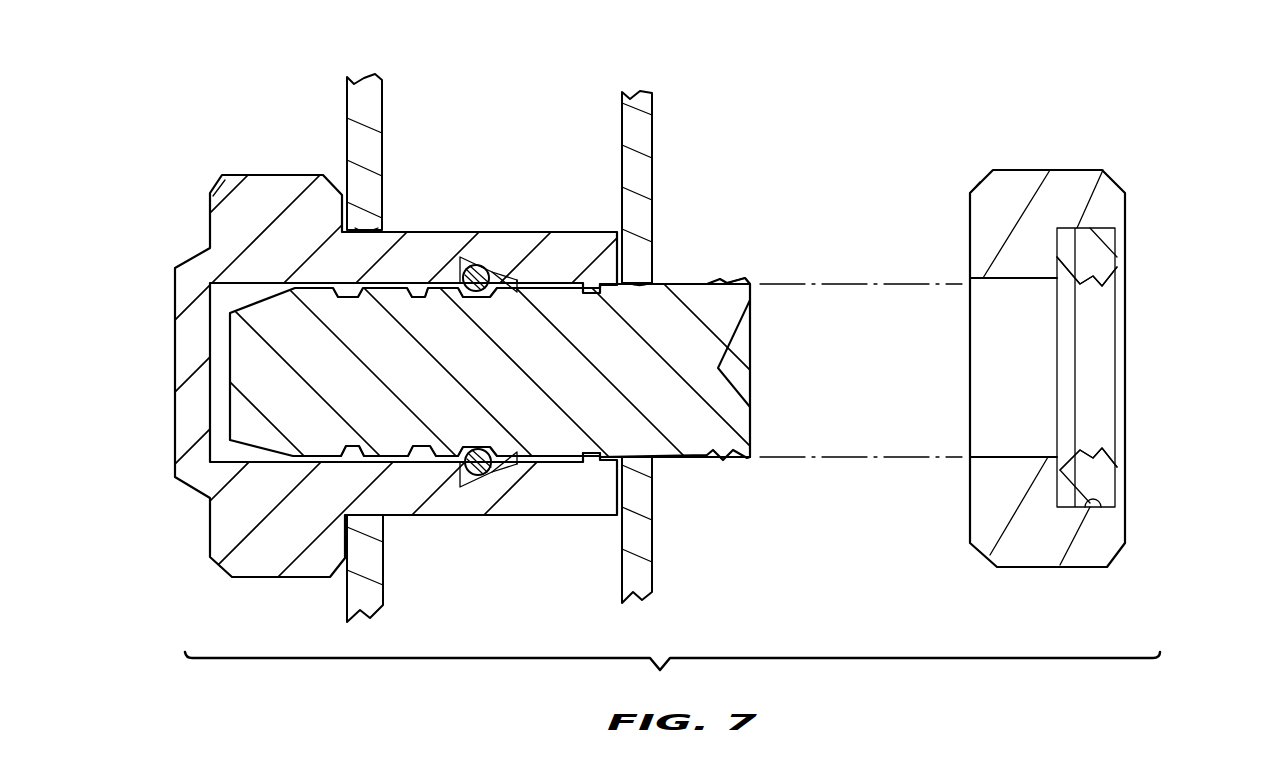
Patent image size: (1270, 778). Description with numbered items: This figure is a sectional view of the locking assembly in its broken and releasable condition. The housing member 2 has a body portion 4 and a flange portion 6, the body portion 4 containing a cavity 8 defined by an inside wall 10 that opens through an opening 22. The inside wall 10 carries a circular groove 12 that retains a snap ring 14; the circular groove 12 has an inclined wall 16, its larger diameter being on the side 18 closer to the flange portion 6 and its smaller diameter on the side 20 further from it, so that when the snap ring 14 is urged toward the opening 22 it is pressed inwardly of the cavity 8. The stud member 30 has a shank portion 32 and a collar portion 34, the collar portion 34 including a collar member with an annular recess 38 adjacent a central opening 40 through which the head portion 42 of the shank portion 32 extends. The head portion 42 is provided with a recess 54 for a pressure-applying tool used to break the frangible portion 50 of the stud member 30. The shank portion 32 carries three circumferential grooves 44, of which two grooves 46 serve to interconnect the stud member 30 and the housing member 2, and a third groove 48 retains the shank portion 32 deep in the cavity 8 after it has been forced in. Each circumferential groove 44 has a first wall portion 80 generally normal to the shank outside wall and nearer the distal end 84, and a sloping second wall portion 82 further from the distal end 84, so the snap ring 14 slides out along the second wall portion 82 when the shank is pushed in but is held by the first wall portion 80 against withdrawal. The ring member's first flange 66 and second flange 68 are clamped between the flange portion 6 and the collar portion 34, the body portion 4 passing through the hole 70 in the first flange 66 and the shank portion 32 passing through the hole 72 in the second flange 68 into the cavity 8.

The housing member 2 is at (273, 182).
The body portion 4 is at (437, 232).
The flange portion 6 is at (207, 215).
The cavity 8 is at (220, 342).
The inside wall 10 is at (243, 290).
The circular groove 12 is at (503, 487).
The snap ring 14 is at (474, 478).
The inclined wall 16 is at (495, 272).
The side of the circular groove 18 is at (468, 262).
The side of the circular groove 20 is at (510, 453).
The opening 22 is at (597, 472).
The stud member 30 is at (723, 323).
The shank portion 32 is at (481, 379).
The collar portion 34 is at (1080, 170).
The annular recess 38 is at (1097, 503).
The central opening 40 is at (1003, 280).
The head portion 42 is at (1120, 262).
The circumferential groove 44 is at (490, 318).
The grooves 46 is at (415, 453).
The third groove 48 is at (503, 280).
The frangible portion 50 is at (735, 277).
The recess 54 is at (740, 383).
The first flange 66 is at (365, 77).
The second flange 68 is at (640, 92).
The hole 70 is at (380, 226).
The hole 72 is at (655, 282).
The first wall portion 80 is at (336, 452).
The second wall portion 82 is at (352, 452).
The distal end 84 is at (228, 397).